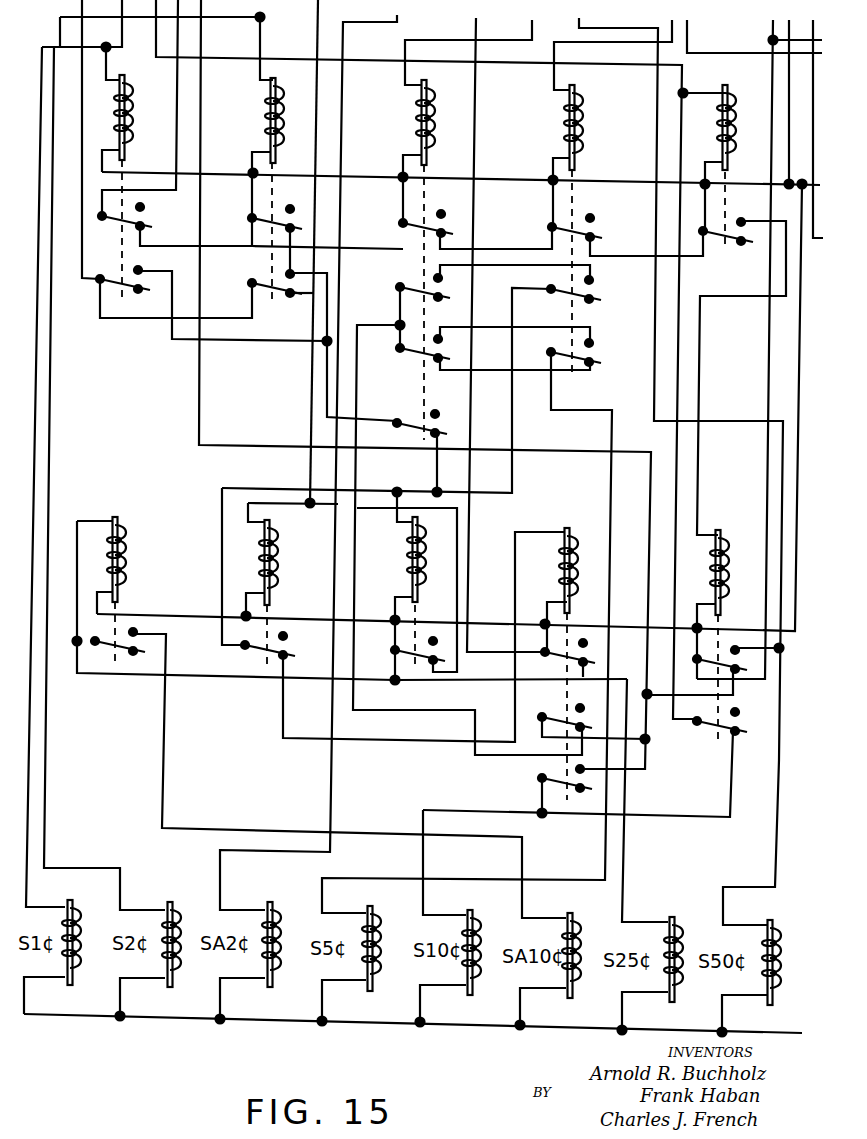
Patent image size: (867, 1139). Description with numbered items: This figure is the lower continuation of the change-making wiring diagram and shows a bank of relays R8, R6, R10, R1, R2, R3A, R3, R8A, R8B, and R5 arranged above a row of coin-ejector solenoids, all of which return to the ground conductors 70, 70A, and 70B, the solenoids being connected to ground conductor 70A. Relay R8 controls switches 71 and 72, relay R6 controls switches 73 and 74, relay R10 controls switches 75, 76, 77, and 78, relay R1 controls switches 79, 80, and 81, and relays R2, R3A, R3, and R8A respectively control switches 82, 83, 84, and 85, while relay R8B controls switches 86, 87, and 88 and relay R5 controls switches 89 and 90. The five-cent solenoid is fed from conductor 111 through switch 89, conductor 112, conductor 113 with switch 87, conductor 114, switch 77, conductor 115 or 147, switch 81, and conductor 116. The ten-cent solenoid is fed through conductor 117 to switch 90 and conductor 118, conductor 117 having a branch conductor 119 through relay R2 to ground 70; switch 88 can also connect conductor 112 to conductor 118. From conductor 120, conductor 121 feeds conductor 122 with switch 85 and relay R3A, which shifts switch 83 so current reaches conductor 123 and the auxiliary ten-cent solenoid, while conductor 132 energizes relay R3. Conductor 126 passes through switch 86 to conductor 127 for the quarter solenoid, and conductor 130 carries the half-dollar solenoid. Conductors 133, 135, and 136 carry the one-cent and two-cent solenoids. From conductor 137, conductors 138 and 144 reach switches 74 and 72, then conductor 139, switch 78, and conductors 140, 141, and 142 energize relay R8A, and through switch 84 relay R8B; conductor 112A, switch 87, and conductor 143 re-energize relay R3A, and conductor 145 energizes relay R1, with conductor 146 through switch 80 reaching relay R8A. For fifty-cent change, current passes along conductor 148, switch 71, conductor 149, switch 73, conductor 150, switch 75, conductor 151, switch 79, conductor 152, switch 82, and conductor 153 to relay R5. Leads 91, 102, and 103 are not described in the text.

The ground conductor 70 is at (608, 184).
The ground conductor 70A is at (389, 1024).
The ground conductor 70B is at (627, 622).
The switch 71 is at (116, 219).
The switch 72 is at (129, 285).
The switch 73 is at (256, 224).
The switch 74 is at (277, 296).
The switch 75 is at (409, 210).
The switch 76 is at (410, 274).
The switch 77 is at (412, 350).
The switch 78 is at (412, 410).
The switch 79 is at (552, 212).
The switch 80 is at (607, 296).
The switch 81 is at (607, 351).
The switch 82 is at (716, 240).
The switch 83 is at (104, 653).
The switch 84 is at (266, 657).
The switch 85 is at (392, 640).
The switch 86 is at (548, 638).
The switch 87 is at (548, 703).
The switch 88 is at (558, 782).
The switch 89 is at (706, 645).
The switch 90 is at (711, 732).
The conductor 91 is at (690, 45).
The conductor 102 is at (817, 240).
The conductor 103 is at (791, 118).
The conductor 111 is at (765, 320).
The conductor 112 is at (648, 722).
The conductor 112A is at (645, 770).
The conductor 113 is at (444, 712).
The conductor 114 is at (398, 339).
The conductor 115 is at (492, 376).
The conductor 116 is at (589, 420).
The conductor 117 is at (374, 60).
The conductor 118 is at (676, 818).
The branch conductor 119 is at (702, 90).
The conductor 120 is at (202, 42).
The conductor 121 is at (316, 42).
The conductor 122 is at (375, 506).
The conductor 123 is at (165, 740).
The conductor 126 is at (478, 95).
The conductor 127 is at (628, 880).
The conductor 130 is at (657, 90).
The conductor 132 is at (320, 514).
The conductor 133 is at (42, 362).
The conductor 135 is at (56, 430).
The conductor 136 is at (344, 152).
The conductor 137 is at (84, 118).
The conductor 138 is at (140, 324).
The conductor 139 is at (325, 394).
The conductor 140 is at (434, 442).
The conductor 141 is at (418, 492).
The conductor 142 is at (400, 517).
The conductor 143 is at (502, 682).
The conductor 144 is at (243, 342).
The conductor 145 is at (630, 42).
The conductor 146 is at (508, 268).
The conductor 147 is at (486, 327).
The conductor 148 is at (175, 143).
The conductor 149 is at (217, 250).
The conductor 150 is at (370, 248).
The conductor 151 is at (520, 250).
The conductor 152 is at (630, 255).
The conductor 153 is at (702, 392).
The relay R1 is at (591, 127).
The relay R2 is at (710, 127).
The relay R3 is at (284, 562).
The relay R3A is at (140, 559).
The relay R5 is at (703, 572).
The relay R6 is at (253, 120).
The relay R8 is at (139, 117).
The relay R8A is at (394, 559).
The relay R8B is at (549, 570).
The relay R10 is at (405, 122).